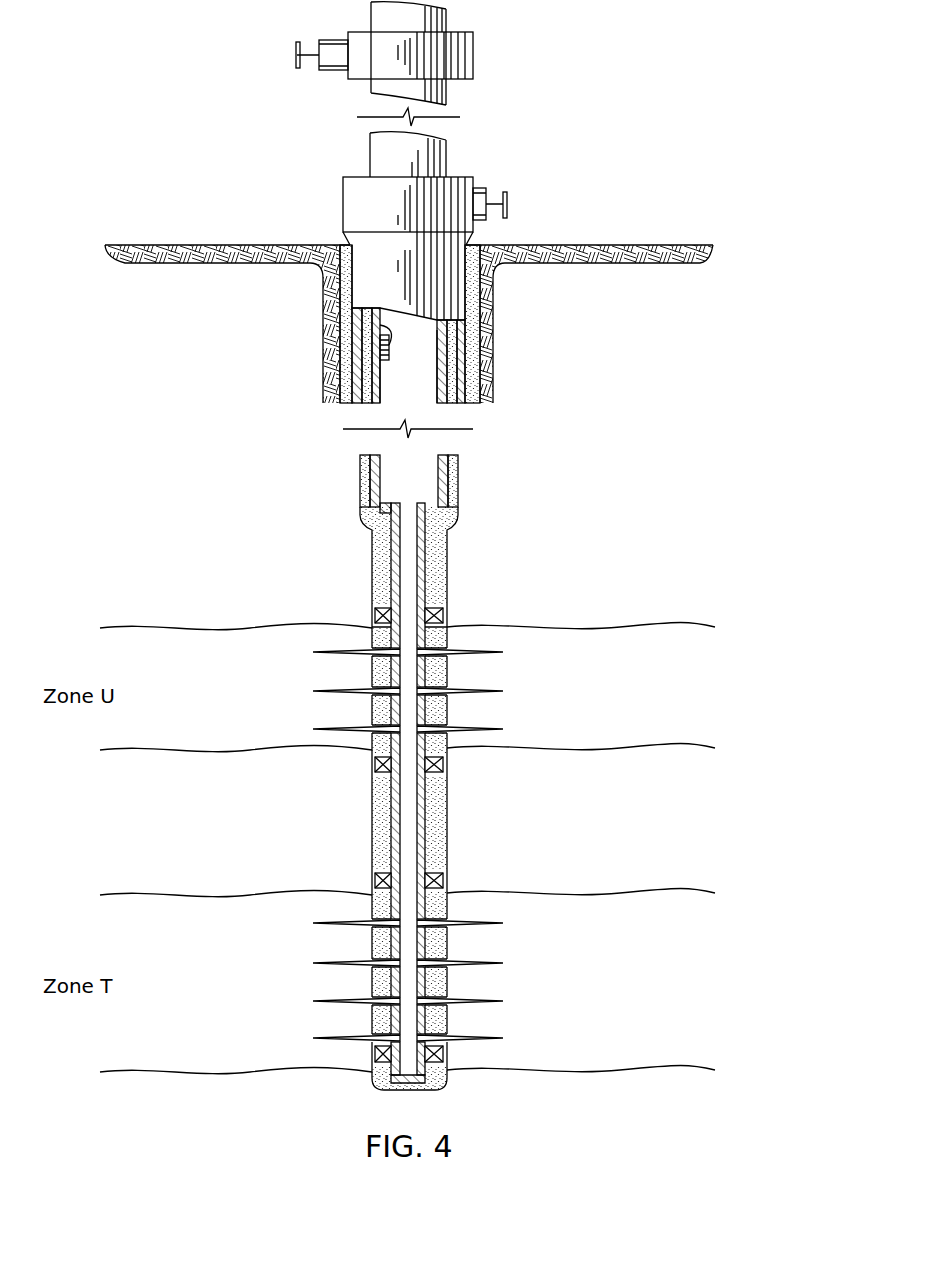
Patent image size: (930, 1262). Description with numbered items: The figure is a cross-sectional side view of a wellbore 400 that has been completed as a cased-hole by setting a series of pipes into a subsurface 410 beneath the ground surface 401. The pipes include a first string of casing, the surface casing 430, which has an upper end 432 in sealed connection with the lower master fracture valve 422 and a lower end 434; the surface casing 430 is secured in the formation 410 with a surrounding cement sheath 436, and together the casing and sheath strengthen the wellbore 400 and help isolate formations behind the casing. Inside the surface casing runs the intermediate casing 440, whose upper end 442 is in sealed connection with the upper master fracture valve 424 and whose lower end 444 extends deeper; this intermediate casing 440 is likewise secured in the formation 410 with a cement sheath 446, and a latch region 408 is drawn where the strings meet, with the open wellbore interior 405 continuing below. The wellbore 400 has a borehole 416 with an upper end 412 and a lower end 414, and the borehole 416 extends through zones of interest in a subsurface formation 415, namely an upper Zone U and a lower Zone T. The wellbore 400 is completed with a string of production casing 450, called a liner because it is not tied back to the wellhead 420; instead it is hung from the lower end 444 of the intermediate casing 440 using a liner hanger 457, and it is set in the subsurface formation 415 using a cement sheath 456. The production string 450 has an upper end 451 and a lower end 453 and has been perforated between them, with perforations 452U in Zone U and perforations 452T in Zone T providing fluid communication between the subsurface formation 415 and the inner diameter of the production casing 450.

The wellbore 400 is at (175, 101).
The surface / ground 401 is at (650, 245).
The wellbore 405 is at (440, 396).
The latch / hanger 408 is at (372, 322).
The subsurface 410 is at (128, 503).
The upper end 412 is at (372, 555).
The lower end 414 is at (375, 1088).
The subsurface formation 415 is at (702, 823).
The borehole 416 is at (372, 833).
The wellhead 420 is at (529, 145).
The lower master fracture valve 422 is at (507, 195).
The upper master fracture valve 424 is at (296, 53).
The surface casing 430 is at (445, 280).
The upper end 432 is at (343, 205).
The lower end 434 is at (325, 392).
The cement sheath 436 is at (482, 355).
The intermediate casing 440 is at (345, 366).
The upper end 442 is at (370, 143).
The lower end 444 is at (449, 470).
The cement sheath 446 is at (362, 465).
The production casing 450 is at (391, 797).
The upper end 451 is at (447, 542).
The perforations 452U is at (330, 691).
The perforations 452T is at (470, 925).
The lower end 453 is at (442, 1088).
The cement sheath 456 is at (444, 820).
The liner hanger 457 is at (385, 500).